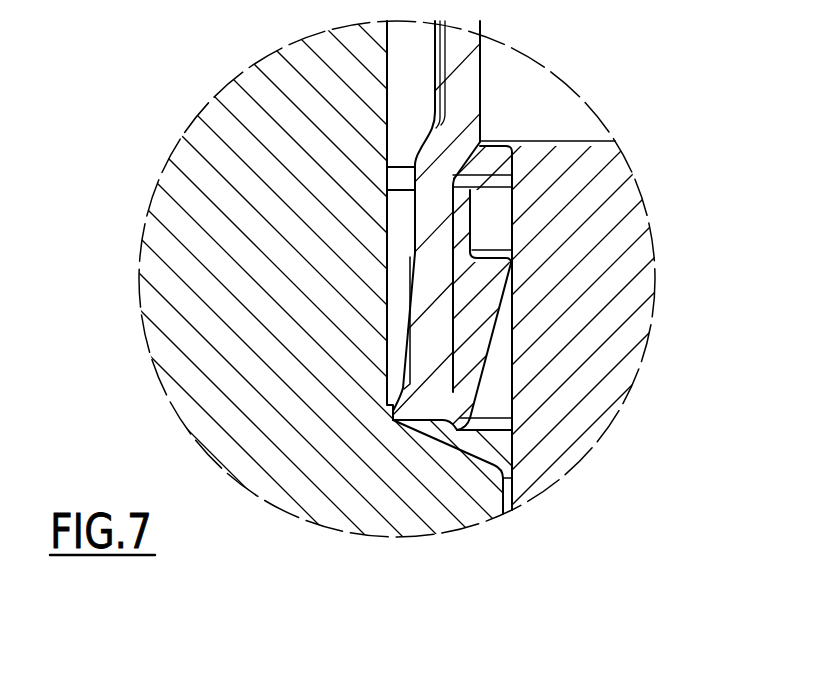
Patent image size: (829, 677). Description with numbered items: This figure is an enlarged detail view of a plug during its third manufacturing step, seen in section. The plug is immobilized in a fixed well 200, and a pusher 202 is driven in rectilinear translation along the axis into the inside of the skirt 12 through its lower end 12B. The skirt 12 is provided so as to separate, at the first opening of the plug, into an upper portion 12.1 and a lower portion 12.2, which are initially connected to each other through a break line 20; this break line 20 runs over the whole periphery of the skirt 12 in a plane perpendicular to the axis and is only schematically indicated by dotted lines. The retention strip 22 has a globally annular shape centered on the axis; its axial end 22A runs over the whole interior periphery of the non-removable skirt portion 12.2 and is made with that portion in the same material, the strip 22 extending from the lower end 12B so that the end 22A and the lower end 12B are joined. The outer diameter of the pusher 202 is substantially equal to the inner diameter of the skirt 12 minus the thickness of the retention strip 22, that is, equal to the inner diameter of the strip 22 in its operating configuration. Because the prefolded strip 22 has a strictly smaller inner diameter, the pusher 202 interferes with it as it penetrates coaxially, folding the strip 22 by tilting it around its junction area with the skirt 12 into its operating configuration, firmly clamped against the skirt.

The skirt 12 is at (101, 57).
The upper portion 12.1 is at (462, 92).
The lower portion 12.2 is at (425, 293).
The lower end 12B is at (420, 405).
The break line 20 is at (415, 203).
The fixed well 200 is at (205, 352).
The pusher 202 is at (617, 283).
The retention strip 22 is at (475, 308).
The axial end 22A is at (467, 398).